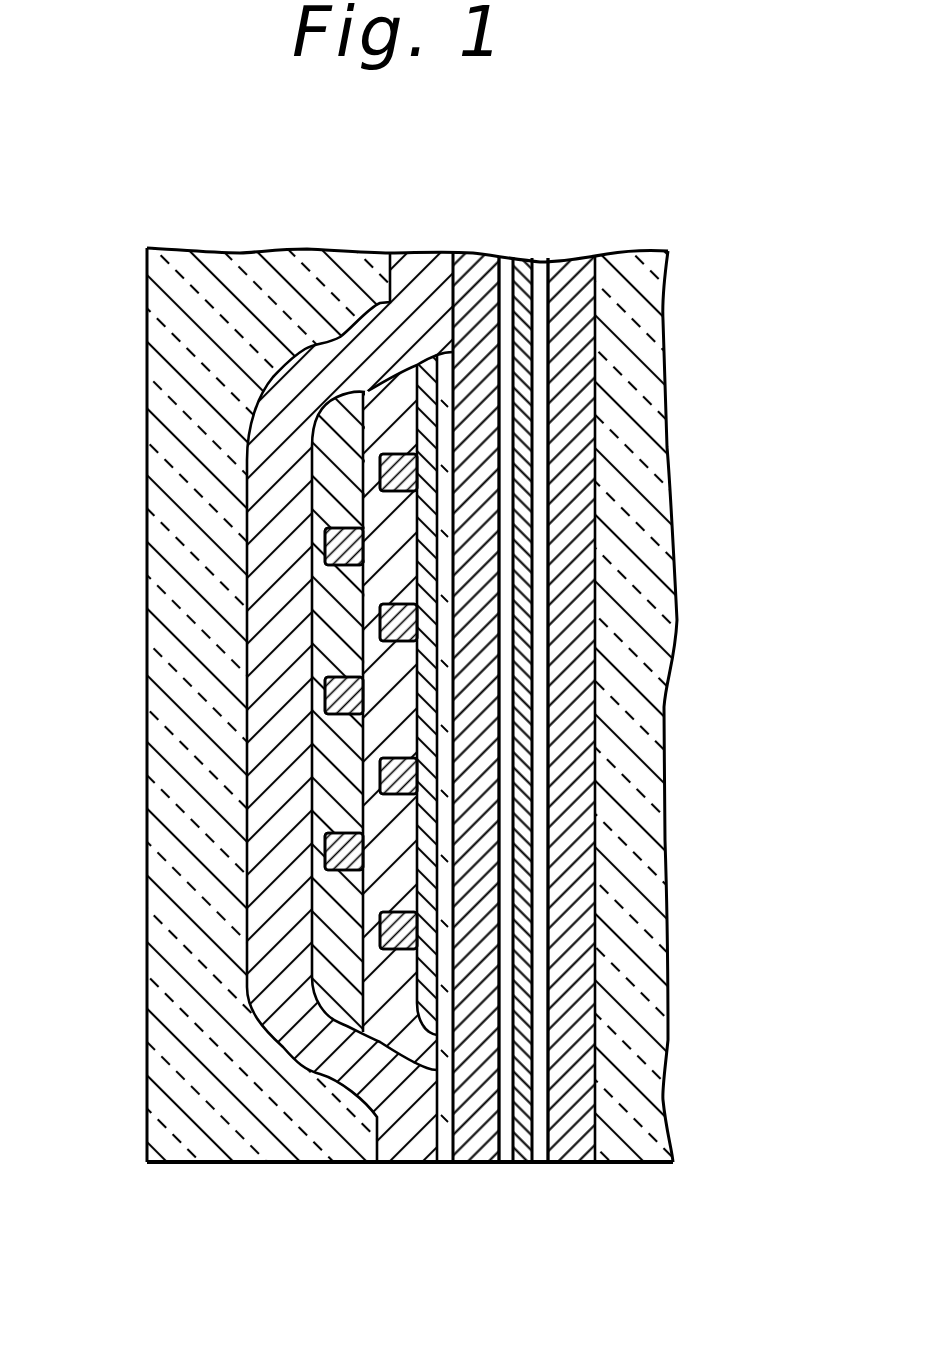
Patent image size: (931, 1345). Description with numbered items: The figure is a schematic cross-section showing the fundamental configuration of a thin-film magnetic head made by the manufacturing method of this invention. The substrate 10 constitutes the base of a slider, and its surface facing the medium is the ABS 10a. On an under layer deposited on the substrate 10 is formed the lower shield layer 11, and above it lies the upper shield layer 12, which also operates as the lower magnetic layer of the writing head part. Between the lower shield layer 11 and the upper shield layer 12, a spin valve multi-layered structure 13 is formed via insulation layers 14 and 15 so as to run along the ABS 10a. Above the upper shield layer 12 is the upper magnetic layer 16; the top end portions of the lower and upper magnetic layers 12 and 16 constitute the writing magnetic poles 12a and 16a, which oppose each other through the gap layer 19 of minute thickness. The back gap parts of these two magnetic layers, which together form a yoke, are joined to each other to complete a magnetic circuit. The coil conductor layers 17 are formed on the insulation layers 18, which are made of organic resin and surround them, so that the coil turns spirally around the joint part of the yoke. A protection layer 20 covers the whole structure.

The substrate 10 is at (647, 353).
The ABS 10a is at (615, 1164).
The lower shield layer 11 is at (577, 448).
The upper shield layer 12 is at (480, 683).
The writing magnetic pole 12a is at (474, 1164).
The spin valve multi-layered structure 13 is at (523, 1117).
The insulation layer 14 is at (507, 815).
The insulation layer 15 is at (523, 890).
The upper magnetic layer 16 is at (263, 1027).
The writing magnetic pole 16a is at (395, 1164).
The coil conductor layers 17 is at (398, 770).
The insulation layers 18 is at (333, 612).
The gap layer 19 is at (440, 585).
The protection layer 20 is at (172, 342).